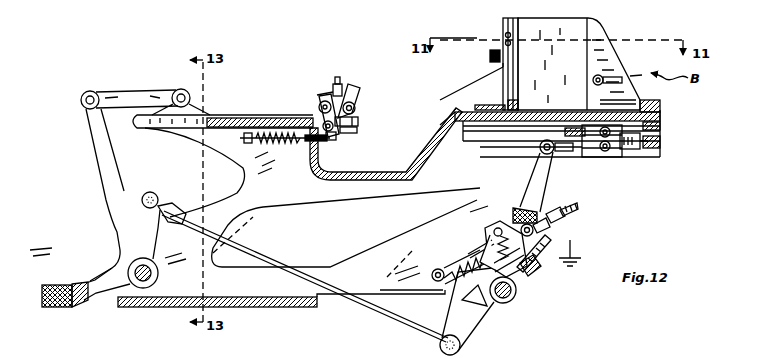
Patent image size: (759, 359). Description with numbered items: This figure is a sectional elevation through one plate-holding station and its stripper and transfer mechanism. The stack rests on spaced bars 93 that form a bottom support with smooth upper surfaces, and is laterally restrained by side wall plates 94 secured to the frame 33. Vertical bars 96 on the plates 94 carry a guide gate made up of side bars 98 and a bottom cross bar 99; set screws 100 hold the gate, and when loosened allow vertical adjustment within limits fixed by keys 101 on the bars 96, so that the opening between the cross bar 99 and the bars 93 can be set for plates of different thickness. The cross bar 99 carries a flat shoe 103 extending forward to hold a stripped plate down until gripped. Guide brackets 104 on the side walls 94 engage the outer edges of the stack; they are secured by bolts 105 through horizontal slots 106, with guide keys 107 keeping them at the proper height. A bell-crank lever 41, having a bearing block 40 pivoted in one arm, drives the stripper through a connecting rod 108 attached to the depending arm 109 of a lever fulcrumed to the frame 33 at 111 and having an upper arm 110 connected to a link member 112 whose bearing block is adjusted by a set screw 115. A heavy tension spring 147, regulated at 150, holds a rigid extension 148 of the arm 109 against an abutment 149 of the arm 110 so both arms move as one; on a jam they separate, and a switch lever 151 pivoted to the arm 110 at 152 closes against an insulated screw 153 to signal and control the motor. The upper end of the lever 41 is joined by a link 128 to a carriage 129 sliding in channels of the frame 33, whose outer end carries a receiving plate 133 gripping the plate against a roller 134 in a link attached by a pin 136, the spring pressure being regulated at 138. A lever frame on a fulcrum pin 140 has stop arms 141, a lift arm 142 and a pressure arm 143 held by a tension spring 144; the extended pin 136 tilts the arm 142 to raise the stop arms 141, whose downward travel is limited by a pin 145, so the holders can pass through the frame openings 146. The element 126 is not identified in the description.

The link 128 is at (122, 94).
The bell-crank lever 41 is at (115, 182).
The bearing block 40 is at (50, 305).
The carriage 129 is at (258, 118).
The frame 33 is at (295, 200).
The connecting rod 108 is at (268, 258).
The depending arm 109 is at (470, 320).
The fulcrum 111 is at (506, 298).
The tension spring 147 is at (460, 262).
The rigid extension 148 is at (477, 247).
The abutment 149 is at (490, 240).
The pivot 152 is at (500, 226).
The spring tension regulator 150 is at (551, 220).
The switch lever 151 is at (549, 242).
The insulated screw 153 is at (536, 266).
The frame openings 146 is at (402, 172).
The tension spring 144 is at (285, 143).
The lift arm 142 is at (320, 102).
The fulcrum pin 140 is at (340, 132).
The pressure arm 143 is at (333, 140).
The pin 136 is at (325, 92).
The spring tension regulator 138 is at (338, 77).
The stop arms 141 is at (352, 91).
The roller 134 is at (355, 107).
The receiving plate 133 is at (358, 121).
The pin 145 is at (358, 129).
The spaced bars 93 is at (553, 112).
The guide keys 107 is at (660, 103).
The side wall plates 94 is at (565, 25).
The guide brackets 104 is at (606, 32).
The bolts 105 is at (603, 78).
The horizontal slots 106 is at (640, 76).
The vertical bars 96 is at (505, 26).
The side bars 98 is at (516, 70).
The bottom cross bar 99 is at (518, 103).
The keys 101 is at (512, 37).
The set screws 100 is at (490, 54).
The flat shoe 103 is at (493, 106).
The upper arm 110 is at (530, 182).
The link member 112 is at (563, 152).
The housing 126 is at (595, 160).
The set screw 115 is at (635, 150).